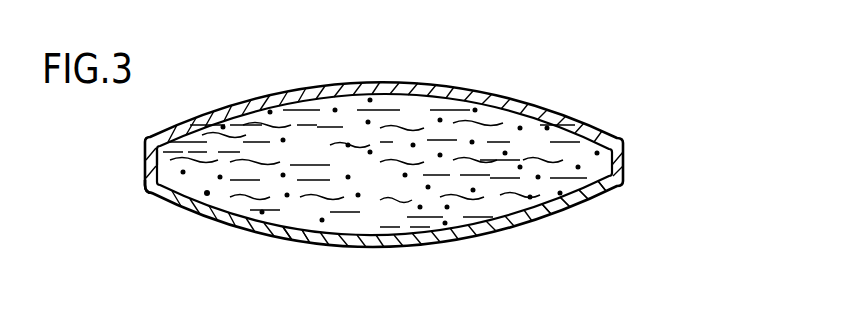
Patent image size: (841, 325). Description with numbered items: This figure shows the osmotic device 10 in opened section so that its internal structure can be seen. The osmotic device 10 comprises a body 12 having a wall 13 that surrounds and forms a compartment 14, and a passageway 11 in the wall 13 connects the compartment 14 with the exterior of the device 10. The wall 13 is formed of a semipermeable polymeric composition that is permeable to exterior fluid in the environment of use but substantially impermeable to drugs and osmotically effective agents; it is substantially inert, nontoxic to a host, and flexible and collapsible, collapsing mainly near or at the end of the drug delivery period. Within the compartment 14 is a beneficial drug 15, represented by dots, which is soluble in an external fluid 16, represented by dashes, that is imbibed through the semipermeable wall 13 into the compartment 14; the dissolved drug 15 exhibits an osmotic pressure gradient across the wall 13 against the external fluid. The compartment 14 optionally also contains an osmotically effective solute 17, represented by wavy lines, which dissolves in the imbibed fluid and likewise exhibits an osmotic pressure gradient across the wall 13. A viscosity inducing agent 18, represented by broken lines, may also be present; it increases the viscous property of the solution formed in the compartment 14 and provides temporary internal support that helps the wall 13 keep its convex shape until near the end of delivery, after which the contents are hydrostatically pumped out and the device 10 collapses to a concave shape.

The osmotic device 10 is at (668, 126).
The passageway 11 is at (385, 88).
The body 12 is at (592, 200).
The wall 13 is at (548, 216).
The compartment 14 is at (508, 200).
The beneficial drug 15 is at (205, 195).
The external fluid 16 is at (293, 217).
The osmotically effective solute 17 is at (164, 205).
The viscosity inducing agent 18 is at (150, 143).